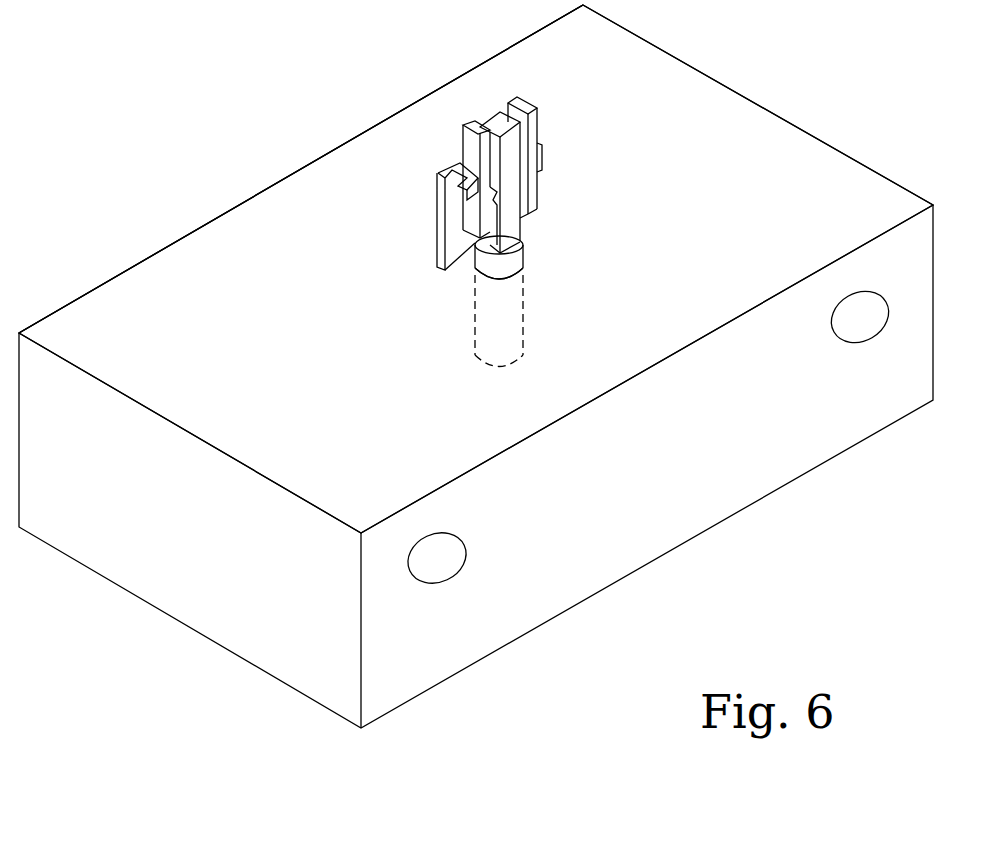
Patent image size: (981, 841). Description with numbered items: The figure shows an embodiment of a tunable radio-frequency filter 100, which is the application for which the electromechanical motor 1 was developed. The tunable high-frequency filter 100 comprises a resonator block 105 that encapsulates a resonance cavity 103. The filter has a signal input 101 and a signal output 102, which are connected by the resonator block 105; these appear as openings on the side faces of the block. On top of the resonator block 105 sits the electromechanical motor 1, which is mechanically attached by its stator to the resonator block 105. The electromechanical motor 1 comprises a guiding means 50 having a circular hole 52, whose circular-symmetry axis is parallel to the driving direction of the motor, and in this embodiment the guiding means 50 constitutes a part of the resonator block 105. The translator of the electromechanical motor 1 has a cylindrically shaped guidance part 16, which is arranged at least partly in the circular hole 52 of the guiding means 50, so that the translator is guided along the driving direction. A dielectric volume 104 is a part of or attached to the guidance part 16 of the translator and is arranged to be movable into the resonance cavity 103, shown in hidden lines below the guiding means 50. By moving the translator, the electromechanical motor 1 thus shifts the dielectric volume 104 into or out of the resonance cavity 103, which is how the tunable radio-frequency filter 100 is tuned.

The electromechanical motor 1 is at (448, 240).
The guidance part 16 is at (495, 268).
The guiding means 50 is at (715, 210).
The circular hole 52 is at (525, 292).
The tunable radio-frequency filter 100 is at (220, 242).
The signal input 101 is at (432, 560).
The signal output 102 is at (853, 325).
The resonance cavity 103 is at (502, 353).
The dielectric volume 104 is at (513, 272).
The resonator block 105 is at (120, 303).